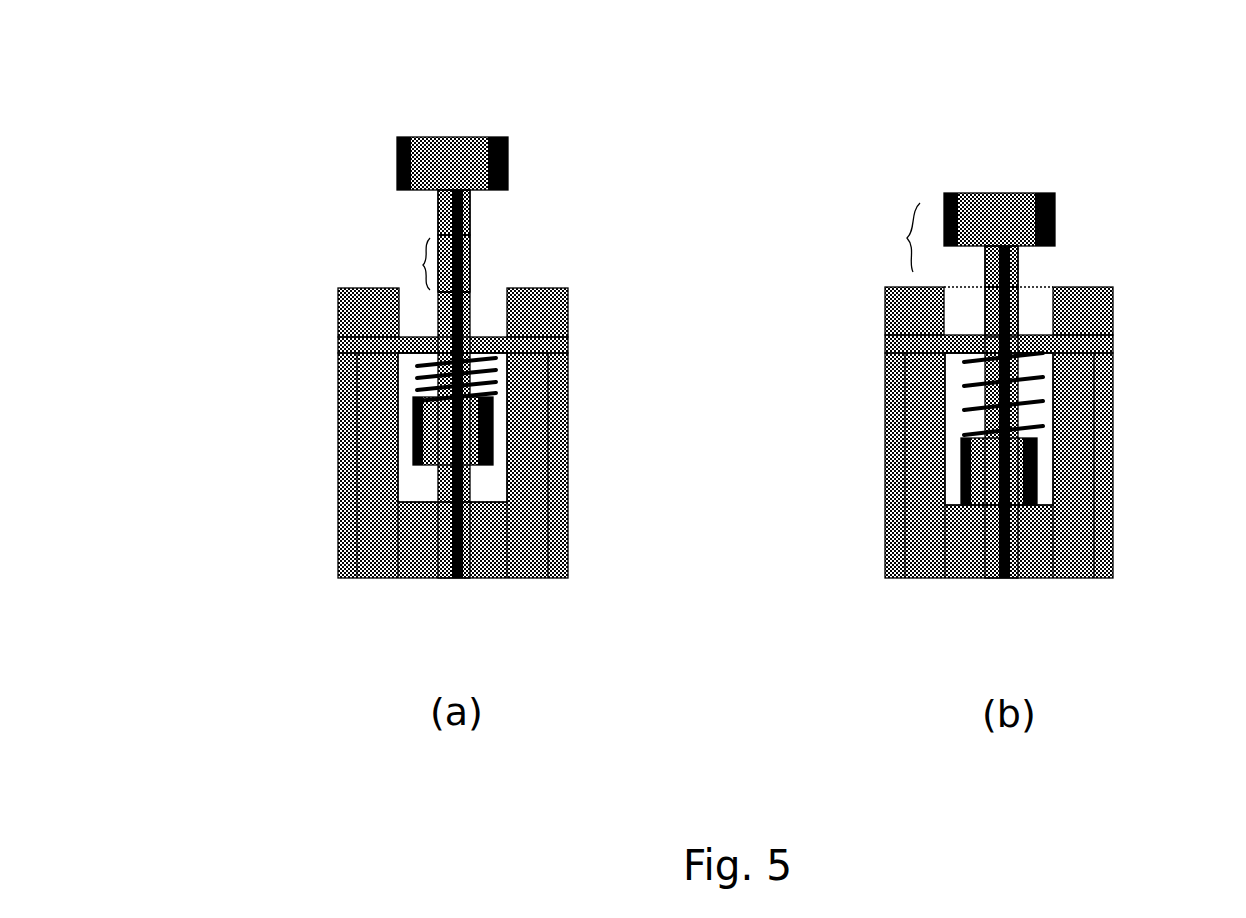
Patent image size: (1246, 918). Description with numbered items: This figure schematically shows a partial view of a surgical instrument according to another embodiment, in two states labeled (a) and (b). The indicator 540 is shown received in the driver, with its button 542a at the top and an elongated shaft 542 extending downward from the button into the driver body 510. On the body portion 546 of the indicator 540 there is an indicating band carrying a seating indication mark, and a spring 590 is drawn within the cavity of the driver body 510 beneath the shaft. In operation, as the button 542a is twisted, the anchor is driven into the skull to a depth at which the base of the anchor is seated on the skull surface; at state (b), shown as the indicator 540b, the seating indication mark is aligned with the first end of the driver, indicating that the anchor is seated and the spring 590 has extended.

The indicator 540 is at (395, 291).
The actuator / plunger assembly (second configuration) 540b is at (1010, 344).
The button 542a is at (498, 128).
The plunger shaft 542 is at (373, 370).
The body portion 546 is at (420, 368).
The spring 590 is at (493, 383).
The housing body 510 is at (530, 478).